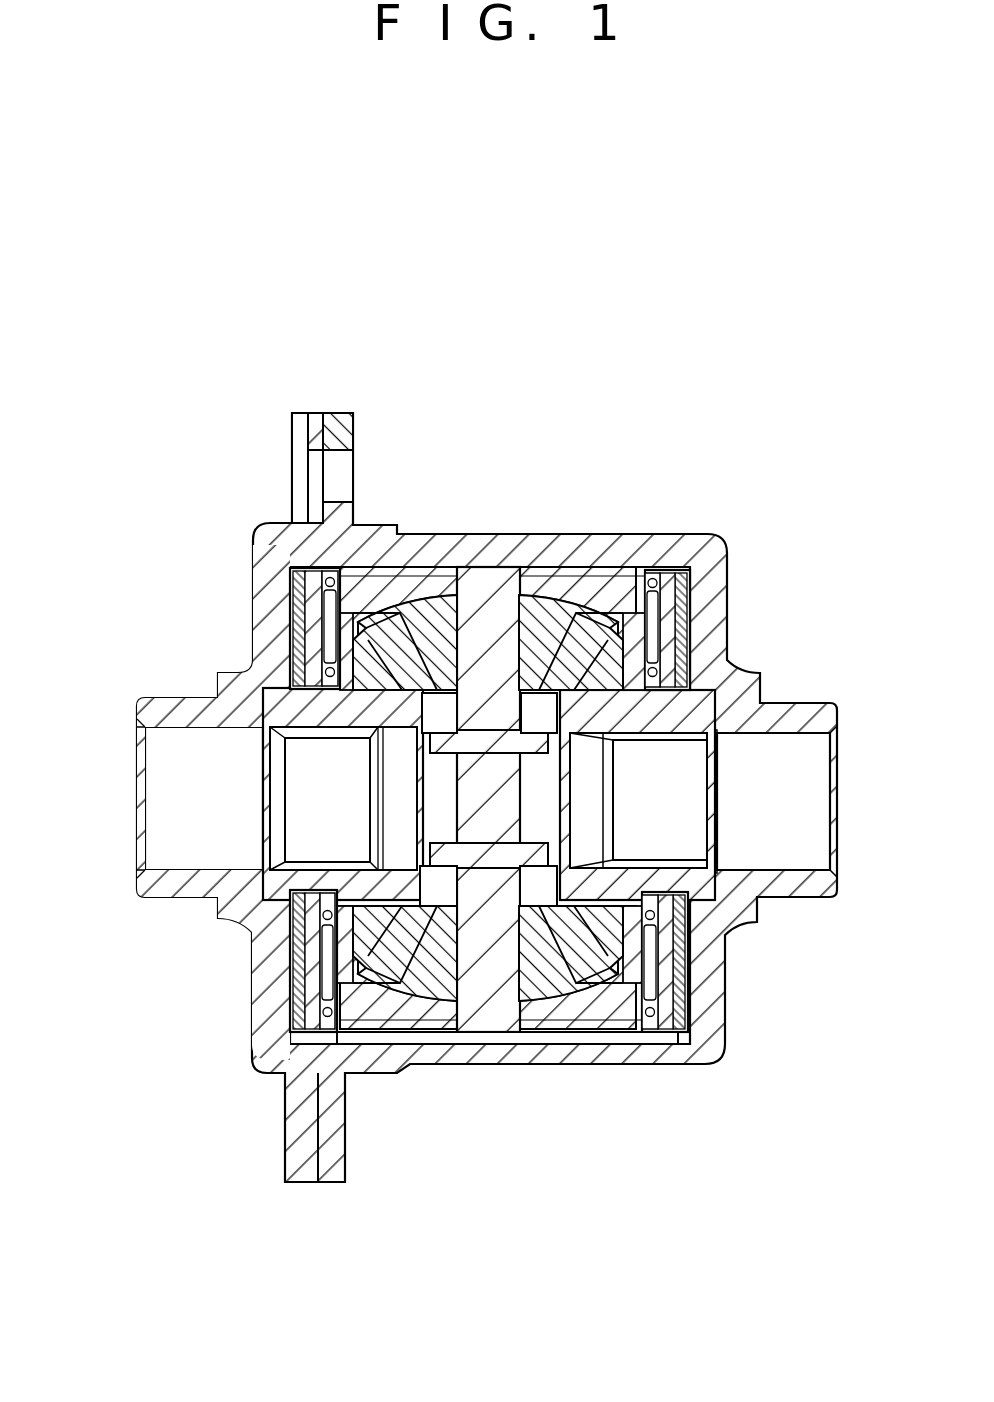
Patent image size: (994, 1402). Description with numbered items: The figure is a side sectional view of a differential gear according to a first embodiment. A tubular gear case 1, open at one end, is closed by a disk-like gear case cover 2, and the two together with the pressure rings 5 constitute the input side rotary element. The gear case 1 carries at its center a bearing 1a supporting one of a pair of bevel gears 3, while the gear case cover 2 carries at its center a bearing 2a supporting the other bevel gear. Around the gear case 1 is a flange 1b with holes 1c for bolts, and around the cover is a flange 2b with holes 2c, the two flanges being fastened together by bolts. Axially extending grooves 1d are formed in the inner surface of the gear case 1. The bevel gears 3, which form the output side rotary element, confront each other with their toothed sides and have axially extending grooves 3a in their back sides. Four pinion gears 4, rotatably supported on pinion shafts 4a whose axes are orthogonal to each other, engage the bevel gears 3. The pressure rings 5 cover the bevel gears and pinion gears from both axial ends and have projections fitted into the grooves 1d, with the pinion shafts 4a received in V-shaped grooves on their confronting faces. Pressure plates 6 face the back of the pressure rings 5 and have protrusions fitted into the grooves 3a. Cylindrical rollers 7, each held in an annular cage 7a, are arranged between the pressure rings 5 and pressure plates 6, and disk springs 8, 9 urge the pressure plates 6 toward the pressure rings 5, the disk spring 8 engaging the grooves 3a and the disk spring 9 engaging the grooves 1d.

The gear case 1 is at (700, 545).
The bearing 1a is at (800, 760).
The flange 1b is at (340, 413).
The holes 1c is at (348, 473).
The axially extending grooves 1d is at (290, 1062).
The gear case cover 2 is at (253, 545).
The bearing 2a is at (158, 810).
The flange 2b is at (300, 413).
The holes 2c is at (312, 480).
The bevel gears 3 is at (375, 930).
The axially extending grooves 3a is at (300, 830).
The pinion gears 4 is at (450, 1050).
The pinion shafts 4a is at (497, 578).
The pressure rings 5 is at (427, 540).
The pressure plates 6 is at (300, 590).
The rollers 7 is at (375, 590).
The annular cage 7a is at (362, 560).
The disk spring 8 is at (300, 640).
The disk spring 9 is at (305, 612).